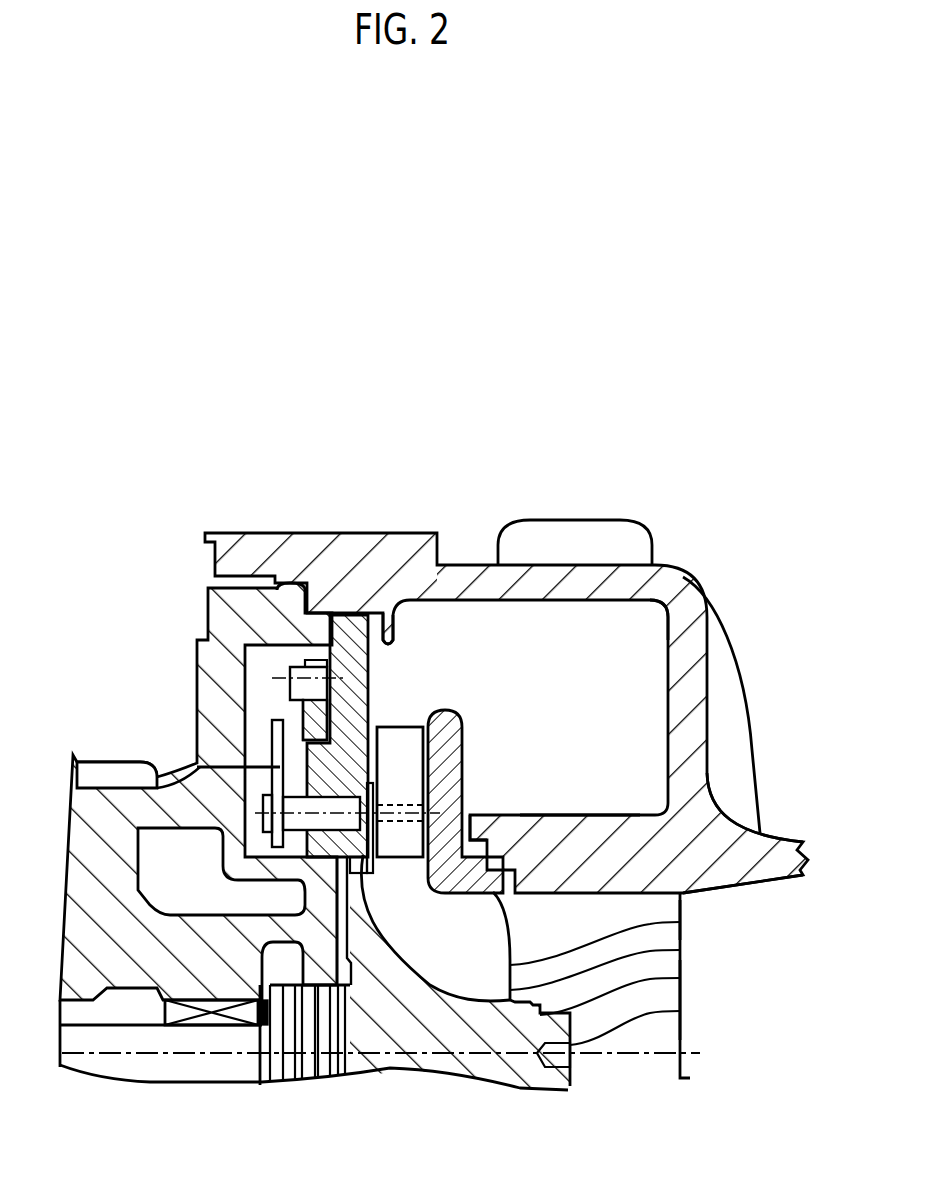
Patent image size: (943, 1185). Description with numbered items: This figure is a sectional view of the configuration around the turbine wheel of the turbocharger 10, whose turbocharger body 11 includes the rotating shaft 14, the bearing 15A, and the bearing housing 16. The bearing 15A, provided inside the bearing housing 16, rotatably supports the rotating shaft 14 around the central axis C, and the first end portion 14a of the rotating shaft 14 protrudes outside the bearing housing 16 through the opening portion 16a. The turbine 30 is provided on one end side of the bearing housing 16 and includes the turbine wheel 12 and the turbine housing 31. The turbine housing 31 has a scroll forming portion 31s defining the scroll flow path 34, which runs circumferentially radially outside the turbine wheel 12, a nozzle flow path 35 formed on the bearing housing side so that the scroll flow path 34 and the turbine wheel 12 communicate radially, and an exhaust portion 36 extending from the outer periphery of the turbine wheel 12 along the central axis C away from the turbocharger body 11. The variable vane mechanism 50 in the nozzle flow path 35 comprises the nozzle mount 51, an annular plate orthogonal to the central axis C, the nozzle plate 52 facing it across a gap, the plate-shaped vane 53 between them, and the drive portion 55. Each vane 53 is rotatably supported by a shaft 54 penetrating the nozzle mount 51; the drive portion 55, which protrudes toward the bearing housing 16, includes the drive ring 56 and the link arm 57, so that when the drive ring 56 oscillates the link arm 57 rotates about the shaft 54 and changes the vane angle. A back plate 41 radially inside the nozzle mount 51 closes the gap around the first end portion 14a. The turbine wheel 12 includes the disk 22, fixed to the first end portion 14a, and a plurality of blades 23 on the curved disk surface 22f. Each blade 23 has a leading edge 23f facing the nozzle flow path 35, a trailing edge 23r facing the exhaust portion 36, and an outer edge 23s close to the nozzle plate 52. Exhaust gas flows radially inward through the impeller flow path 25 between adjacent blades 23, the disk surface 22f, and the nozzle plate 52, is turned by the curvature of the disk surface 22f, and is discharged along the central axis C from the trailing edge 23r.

The turbocharger 10 is at (608, 362).
The turbocharger body 11 is at (318, 828).
The turbine wheel 12 is at (680, 978).
The rotating shaft 14 is at (133, 1022).
The first end portion 14a is at (680, 1012).
The bearing 15A is at (217, 1020).
The bearing housing 16 is at (197, 722).
The opening portion 16a is at (343, 1008).
The disk 22 is at (385, 968).
The disk surface 22f is at (485, 972).
The blade 23 is at (680, 947).
The trailing edge 23r is at (680, 921).
The outer edge 23s is at (573, 812).
The leading edge 23f is at (493, 840).
The impeller flow path 25 is at (562, 882).
The turbine 30 is at (668, 566).
The turbine housing 31 is at (705, 666).
The scroll forming portion 31s is at (600, 520).
The scroll flow path 34 is at (650, 622).
The nozzle flow path 35 is at (415, 700).
The exhaust portion 36 is at (713, 894).
The back plate 41 is at (367, 905).
The variable vane mechanism 50 is at (398, 784).
The nozzle mount 51 is at (372, 628).
The nozzle plate 52 is at (462, 763).
The vane 53 is at (422, 730).
The shaft 54 is at (403, 807).
The drive portion 55 is at (297, 672).
The drive ring 56 is at (273, 722).
The link arm 57 is at (177, 788).
The central axis C is at (655, 1057).